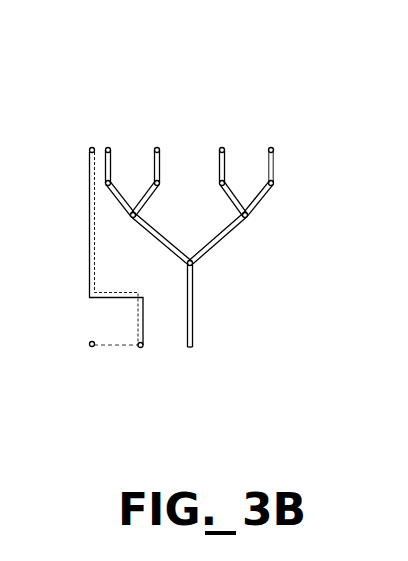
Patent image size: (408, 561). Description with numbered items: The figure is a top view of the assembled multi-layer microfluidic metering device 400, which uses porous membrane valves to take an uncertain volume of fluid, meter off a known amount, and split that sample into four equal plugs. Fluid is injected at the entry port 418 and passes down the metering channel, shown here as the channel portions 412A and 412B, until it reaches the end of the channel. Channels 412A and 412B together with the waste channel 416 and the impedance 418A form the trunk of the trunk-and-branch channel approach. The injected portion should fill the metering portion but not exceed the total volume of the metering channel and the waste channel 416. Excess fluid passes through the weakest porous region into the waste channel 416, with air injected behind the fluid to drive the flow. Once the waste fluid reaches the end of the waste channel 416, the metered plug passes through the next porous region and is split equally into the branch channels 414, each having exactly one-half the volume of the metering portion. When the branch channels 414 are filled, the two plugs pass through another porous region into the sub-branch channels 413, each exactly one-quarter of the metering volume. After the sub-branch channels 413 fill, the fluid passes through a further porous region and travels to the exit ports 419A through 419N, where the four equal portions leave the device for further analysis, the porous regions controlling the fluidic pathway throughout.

The device 400 is at (127, 76).
The exit port 419A is at (108, 147).
The exit port 419N is at (271, 147).
The sub-branch channel 413 is at (267, 195).
The branch channel 414 is at (226, 240).
The waste channel 416 is at (90, 222).
The entry port 418 is at (89, 344).
The channel 412A is at (123, 347).
The impedance 418A is at (140, 348).
The channel 412B is at (192, 322).